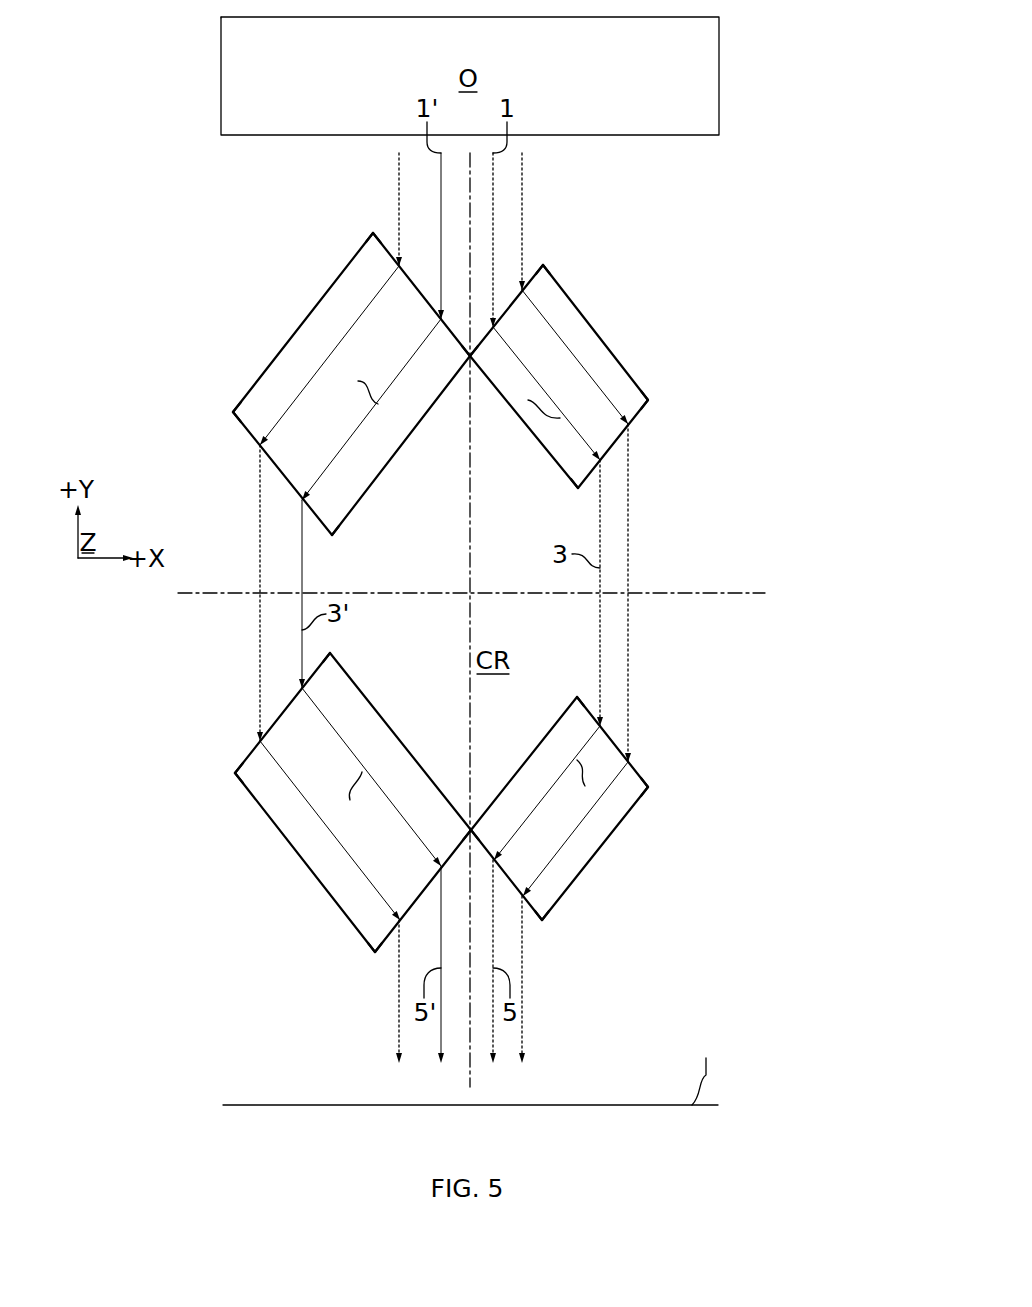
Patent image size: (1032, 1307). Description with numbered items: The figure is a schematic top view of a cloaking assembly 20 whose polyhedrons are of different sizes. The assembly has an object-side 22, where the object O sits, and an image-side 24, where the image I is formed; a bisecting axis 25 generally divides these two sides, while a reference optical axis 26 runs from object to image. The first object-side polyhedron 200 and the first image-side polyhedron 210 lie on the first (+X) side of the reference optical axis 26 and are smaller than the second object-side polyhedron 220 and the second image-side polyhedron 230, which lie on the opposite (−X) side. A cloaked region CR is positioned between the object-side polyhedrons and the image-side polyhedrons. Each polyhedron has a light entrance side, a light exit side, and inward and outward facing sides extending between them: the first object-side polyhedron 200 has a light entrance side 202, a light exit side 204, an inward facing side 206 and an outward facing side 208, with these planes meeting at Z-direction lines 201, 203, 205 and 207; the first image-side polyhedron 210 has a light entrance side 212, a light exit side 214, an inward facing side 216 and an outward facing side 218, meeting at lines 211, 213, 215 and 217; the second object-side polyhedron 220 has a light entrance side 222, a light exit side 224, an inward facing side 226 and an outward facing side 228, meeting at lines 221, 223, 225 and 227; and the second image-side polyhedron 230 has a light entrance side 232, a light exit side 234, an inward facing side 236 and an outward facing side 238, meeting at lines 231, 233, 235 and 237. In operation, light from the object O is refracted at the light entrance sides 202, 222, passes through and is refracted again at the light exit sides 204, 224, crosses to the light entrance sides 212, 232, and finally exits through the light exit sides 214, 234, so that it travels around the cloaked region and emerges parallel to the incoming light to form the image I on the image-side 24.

The cloaking assembly 20 is at (816, 184).
The object-side 22 is at (792, 309).
The image-side 24 is at (728, 827).
The bisecting axis 25 is at (742, 593).
The reference optical axis 26 is at (470, 218).
The first object-side polyhedron 200 is at (605, 368).
The line 201 is at (478, 356).
The light entrance side 202 is at (543, 262).
The line 203 is at (549, 270).
The light exit side 204 is at (647, 405).
The line 205 is at (644, 393).
The inward facing side 206 is at (528, 432).
The line 207 is at (572, 482).
The outward facing side 208 is at (588, 305).
The first image-side polyhedron 210 is at (601, 834).
The line 211 is at (578, 702).
The light entrance side 212 is at (642, 778).
The line 213 is at (648, 796).
The light exit side 214 is at (540, 926).
The line 215 is at (546, 918).
The inward facing side 216 is at (548, 738).
The line 217 is at (480, 832).
The outward facing side 218 is at (614, 832).
The second object-side polyhedron 220 is at (309, 382).
The line 221 is at (465, 356).
The light entrance side 222 is at (376, 236).
The line 223 is at (370, 235).
The light exit side 224 is at (240, 424).
The line 225 is at (238, 407).
The inward facing side 226 is at (398, 448).
The line 227 is at (340, 528).
The outward facing side 228 is at (314, 310).
The second image-side polyhedron 230 is at (313, 829).
The line 231 is at (330, 660).
The light entrance side 232 is at (240, 762).
The line 233 is at (240, 782).
The light exit side 234 is at (380, 954).
The line 235 is at (372, 950).
The inward facing side 236 is at (374, 705).
The line 237 is at (442, 836).
The outward facing side 238 is at (276, 836).